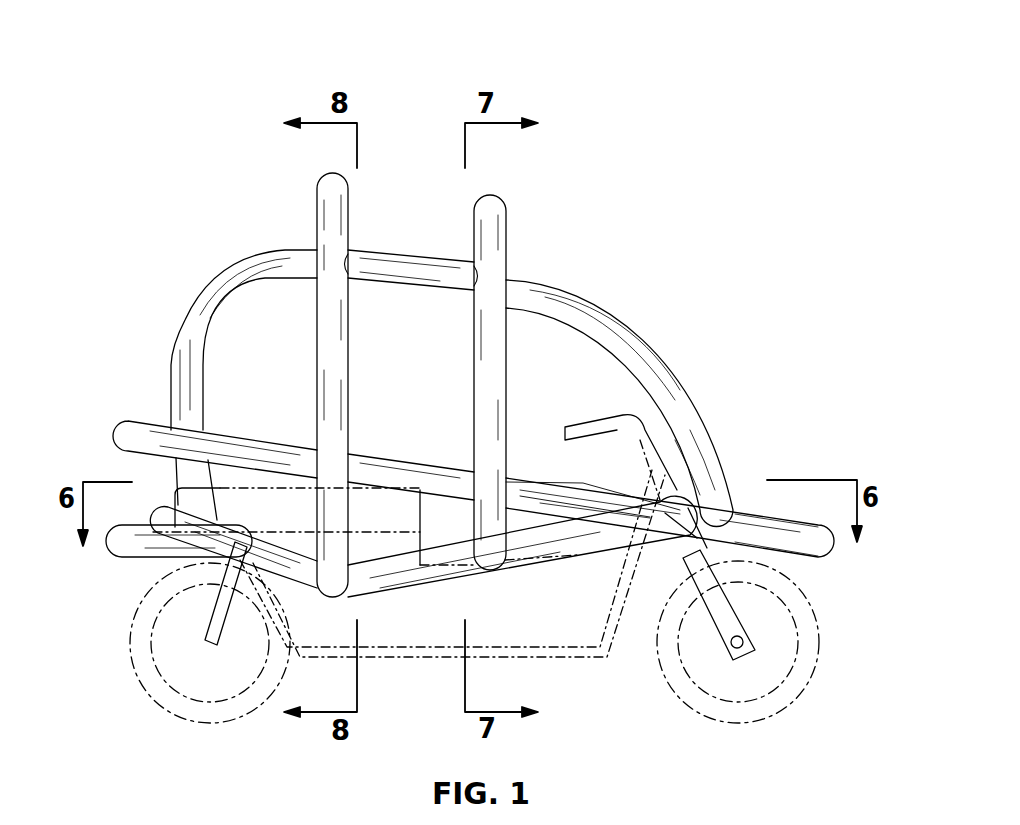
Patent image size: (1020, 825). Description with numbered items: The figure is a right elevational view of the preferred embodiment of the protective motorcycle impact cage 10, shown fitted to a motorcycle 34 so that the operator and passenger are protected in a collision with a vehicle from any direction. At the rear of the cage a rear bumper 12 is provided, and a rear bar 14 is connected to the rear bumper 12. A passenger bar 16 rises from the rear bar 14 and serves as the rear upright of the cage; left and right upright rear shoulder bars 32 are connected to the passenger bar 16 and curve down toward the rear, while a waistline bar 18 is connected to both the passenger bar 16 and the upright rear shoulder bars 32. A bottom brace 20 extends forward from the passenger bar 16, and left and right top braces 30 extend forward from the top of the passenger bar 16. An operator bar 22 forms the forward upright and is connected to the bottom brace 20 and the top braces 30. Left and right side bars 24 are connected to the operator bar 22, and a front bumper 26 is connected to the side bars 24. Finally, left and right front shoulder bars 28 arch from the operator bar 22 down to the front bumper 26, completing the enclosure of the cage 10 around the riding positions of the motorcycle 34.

The protective motorcycle impact cage 10 is at (175, 168).
The rear bumper 12 is at (125, 541).
The rear bar 14 is at (163, 512).
The passenger bar 16 is at (333, 173).
The waistline bar 18 is at (137, 432).
The bottom brace 20 is at (372, 582).
The operator bar 22 is at (492, 235).
The side bars 24 is at (524, 559).
The front bumper 26 is at (810, 543).
The front shoulder bars 28 is at (596, 318).
The top braces 30 is at (372, 268).
The upright rear shoulder bars 32 is at (227, 278).
The motorcycle 34 is at (562, 654).